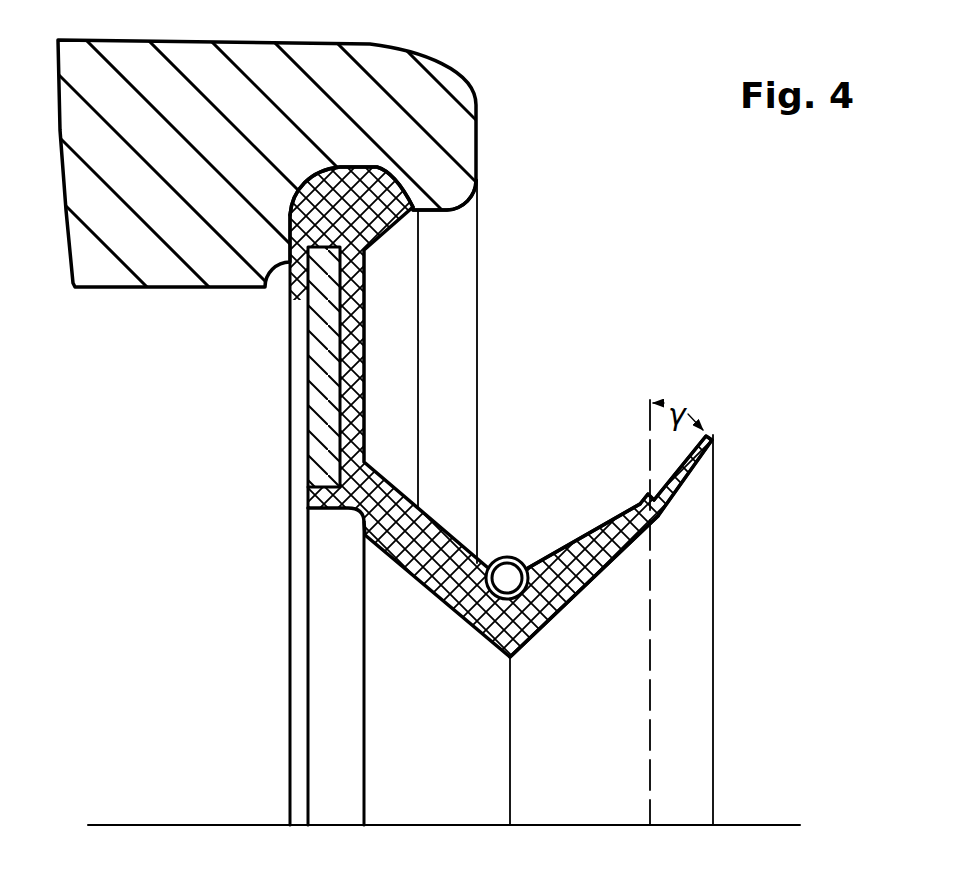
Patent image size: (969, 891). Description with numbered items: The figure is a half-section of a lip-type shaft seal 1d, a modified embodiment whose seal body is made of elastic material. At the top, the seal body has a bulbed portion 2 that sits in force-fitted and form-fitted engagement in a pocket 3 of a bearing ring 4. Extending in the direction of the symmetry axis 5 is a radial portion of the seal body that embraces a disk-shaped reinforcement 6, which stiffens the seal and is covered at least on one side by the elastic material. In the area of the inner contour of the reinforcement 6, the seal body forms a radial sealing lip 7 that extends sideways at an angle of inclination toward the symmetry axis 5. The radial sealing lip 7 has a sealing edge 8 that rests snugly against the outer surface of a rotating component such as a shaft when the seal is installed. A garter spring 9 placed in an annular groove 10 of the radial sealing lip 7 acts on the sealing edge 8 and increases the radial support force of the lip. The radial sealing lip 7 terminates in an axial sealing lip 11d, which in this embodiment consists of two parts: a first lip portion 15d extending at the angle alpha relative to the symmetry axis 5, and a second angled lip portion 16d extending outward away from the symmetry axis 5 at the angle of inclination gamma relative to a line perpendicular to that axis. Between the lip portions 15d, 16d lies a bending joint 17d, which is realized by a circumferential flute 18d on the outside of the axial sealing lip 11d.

The lip-type shaft seal 1d is at (530, 318).
The bulbed portion 2 is at (414, 232).
The pocket 3 is at (413, 182).
The bearing ring 4 is at (452, 123).
The symmetry axis 5 is at (122, 823).
The disk-shaped reinforcement 6 is at (320, 362).
The radial sealing lip 7 is at (370, 553).
The sealing edge 8 is at (510, 660).
The garter spring 9 is at (524, 567).
The annular groove 10 is at (484, 566).
The axial sealing lip 11d is at (571, 617).
The first lip portion 15d is at (607, 567).
The second angled lip portion 16d is at (693, 470).
The bending joint 17d is at (630, 490).
The circumferential flute 18d is at (643, 498).